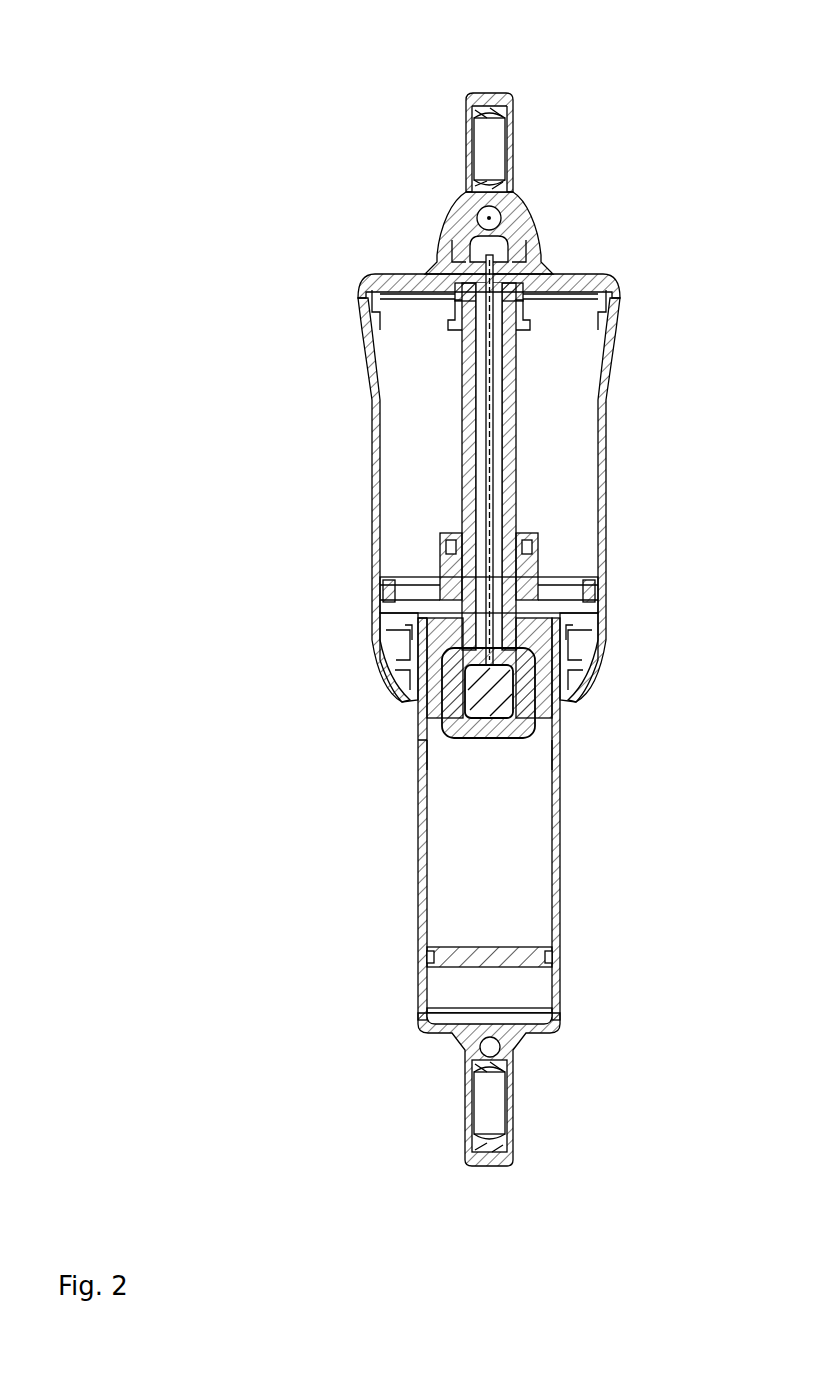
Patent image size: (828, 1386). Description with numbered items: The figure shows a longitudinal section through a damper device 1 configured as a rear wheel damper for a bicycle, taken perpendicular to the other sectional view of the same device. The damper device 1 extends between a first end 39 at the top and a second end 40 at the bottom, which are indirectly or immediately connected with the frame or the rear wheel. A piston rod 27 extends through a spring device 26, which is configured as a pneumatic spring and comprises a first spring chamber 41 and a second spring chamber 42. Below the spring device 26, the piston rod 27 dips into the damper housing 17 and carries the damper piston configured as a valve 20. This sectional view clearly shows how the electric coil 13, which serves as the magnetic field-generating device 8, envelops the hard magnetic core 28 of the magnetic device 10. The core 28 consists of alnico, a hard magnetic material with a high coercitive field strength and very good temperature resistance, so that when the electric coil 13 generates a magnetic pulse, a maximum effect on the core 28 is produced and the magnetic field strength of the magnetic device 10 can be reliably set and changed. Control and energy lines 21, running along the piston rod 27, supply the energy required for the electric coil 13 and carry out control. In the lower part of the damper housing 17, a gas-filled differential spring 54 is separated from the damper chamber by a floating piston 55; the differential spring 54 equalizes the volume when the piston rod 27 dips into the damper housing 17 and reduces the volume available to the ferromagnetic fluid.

The damper device 1 is at (228, 72).
The first end 39 is at (528, 128).
The control and energy lines 21 is at (494, 338).
The piston rod 27 is at (528, 437).
The spring device 26 is at (357, 486).
The first spring chamber 41 is at (575, 484).
The second spring chamber 42 is at (585, 643).
The magnetic device 10 is at (438, 735).
The valve 20 is at (440, 760).
The electric coil 13 is at (460, 725).
The core 28 is at (515, 718).
The magnetic field-generating device 8 is at (505, 728).
The damper housing 17 is at (570, 878).
The floating piston 55 is at (440, 955).
The differential spring 54 is at (447, 980).
The second end 40 is at (527, 1157).